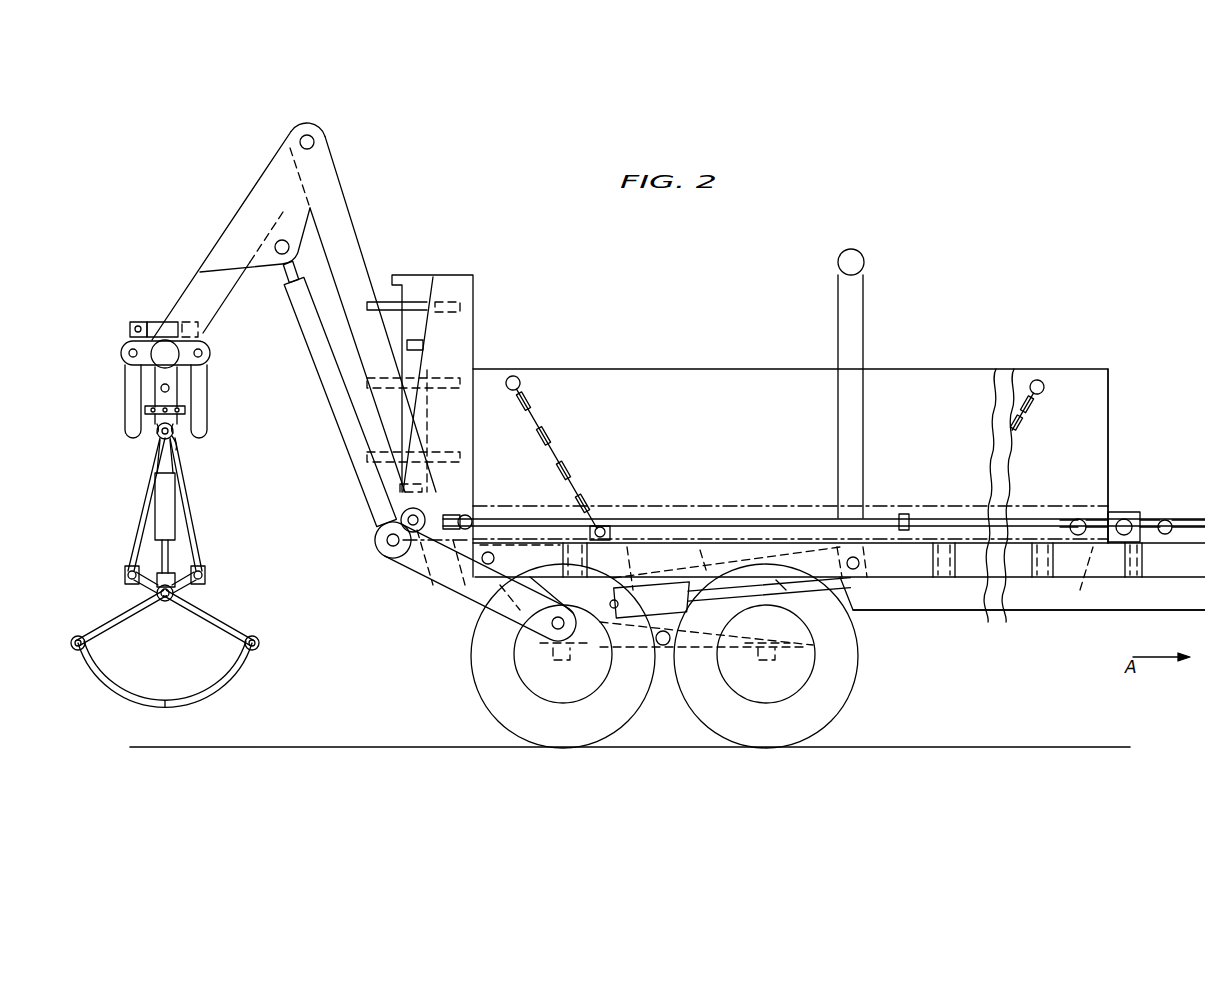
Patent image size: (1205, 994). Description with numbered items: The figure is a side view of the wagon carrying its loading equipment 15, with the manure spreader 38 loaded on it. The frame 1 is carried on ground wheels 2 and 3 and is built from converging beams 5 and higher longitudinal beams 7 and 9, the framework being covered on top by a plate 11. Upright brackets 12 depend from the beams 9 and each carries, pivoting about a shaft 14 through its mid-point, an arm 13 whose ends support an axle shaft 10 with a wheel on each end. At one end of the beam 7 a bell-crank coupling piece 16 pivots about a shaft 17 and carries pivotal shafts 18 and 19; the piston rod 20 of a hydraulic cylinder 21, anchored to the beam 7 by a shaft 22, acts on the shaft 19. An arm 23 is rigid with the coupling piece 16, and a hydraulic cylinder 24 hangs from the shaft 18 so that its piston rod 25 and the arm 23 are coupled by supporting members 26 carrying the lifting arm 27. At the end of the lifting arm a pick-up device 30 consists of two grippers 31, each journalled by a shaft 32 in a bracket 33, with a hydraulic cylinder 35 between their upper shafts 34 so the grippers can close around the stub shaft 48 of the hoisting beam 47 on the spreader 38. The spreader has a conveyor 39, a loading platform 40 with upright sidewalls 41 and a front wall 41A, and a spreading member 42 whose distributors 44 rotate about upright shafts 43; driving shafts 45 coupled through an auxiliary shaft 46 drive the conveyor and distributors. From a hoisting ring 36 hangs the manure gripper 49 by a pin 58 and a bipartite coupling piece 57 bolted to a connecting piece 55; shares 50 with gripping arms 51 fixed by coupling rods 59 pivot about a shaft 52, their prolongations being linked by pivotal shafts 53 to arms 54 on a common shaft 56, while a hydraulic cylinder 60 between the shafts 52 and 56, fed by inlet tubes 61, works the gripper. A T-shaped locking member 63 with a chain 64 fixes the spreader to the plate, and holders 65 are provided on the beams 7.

The frame 1 is at (960, 618).
The ground wheel 2 is at (828, 723).
The ground wheel 3 is at (497, 722).
The beam 5 is at (990, 620).
The longitudinal beam 7 is at (918, 588).
The longitudinal beam 9 is at (732, 598).
The axle shaft 10 is at (553, 660).
The plate 11 is at (1093, 547).
The upright bracket 12 is at (651, 680).
The arm 13 is at (803, 647).
The shaft 14 is at (656, 643).
The loading equipment 15 is at (367, 199).
The bell-crank coupling piece 16 is at (392, 566).
The shaft 17 is at (454, 592).
The pivotal shaft 18 is at (372, 540).
The pivotal shaft 19 is at (540, 623).
The piston rod 20 is at (612, 606).
The hydraulic cylinder 21 is at (782, 584).
The shaft 22 is at (855, 576).
The arm 23 is at (352, 242).
The hydraulic cylinder 24 is at (338, 428).
The piston rod 25 is at (285, 274).
The supporting member 26 is at (244, 203).
The lifting arm 27 is at (208, 272).
The pick-up device 30 is at (218, 382).
The gripper 31 is at (207, 385).
The shaft 32 is at (209, 354).
The bracket 33 is at (122, 353).
The shaft 34 is at (129, 324).
The hydraulic cylinder 35 is at (150, 320).
The hoisting ring 36 is at (156, 372).
The manure spreader 38 is at (769, 368).
The conveyor 39 is at (777, 503).
The loading platform 40 is at (712, 504).
The upright sidewall 41 is at (1003, 369).
The front wall 41A is at (1110, 420).
The manure spreading member 42 is at (483, 283).
The upright shaft 43 is at (416, 285).
The distributor 44 is at (470, 316).
The driving shaft 45 is at (900, 515).
The auxiliary shaft 46 is at (1198, 519).
The hoisting beam 47 is at (865, 306).
The stub shaft 48 is at (838, 260).
The manure gripper 49 is at (205, 533).
The share 50 is at (195, 612).
The gripping arm 51 is at (182, 700).
The shaft 52 is at (178, 594).
The pivotal shaft 53 is at (125, 575).
The arm 54 is at (147, 490).
The connecting piece 55 is at (208, 430).
The shaft 56 is at (158, 438).
The coupling piece 57 is at (146, 408).
The pin 58 is at (185, 411).
The coupling rod 59 is at (78, 636).
The hydraulic cylinder 60 is at (176, 499).
The hydraulic inlet tube 61 is at (176, 440).
The T-shaped locking member 63 is at (606, 527).
The chain 64 is at (566, 454).
The holder 65 is at (1046, 584).